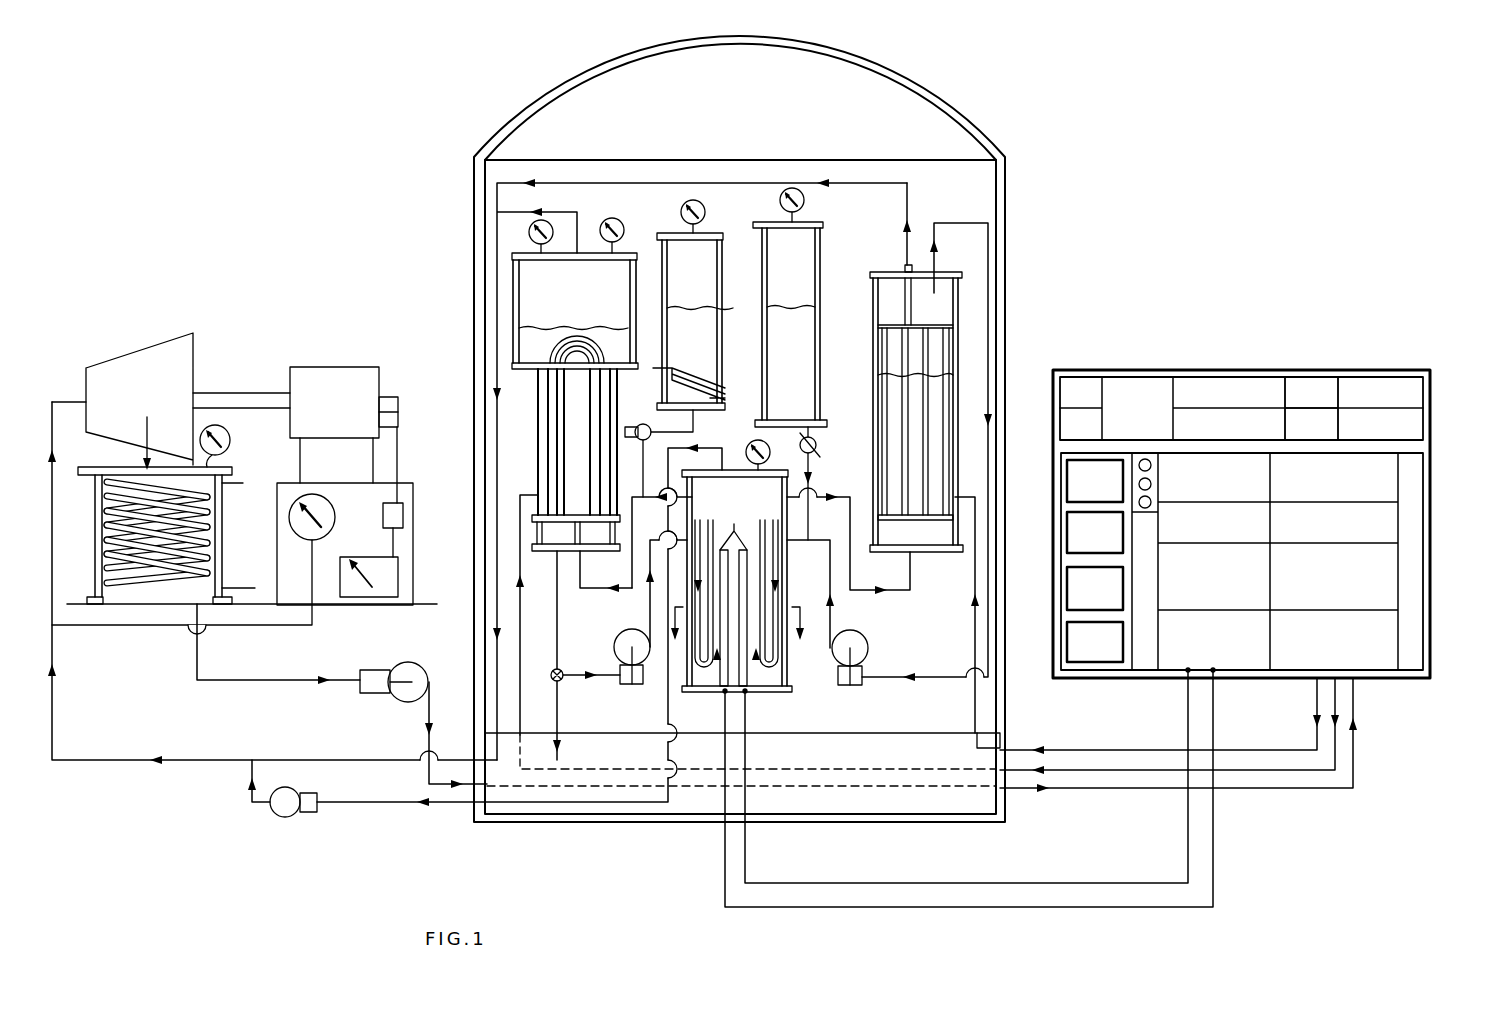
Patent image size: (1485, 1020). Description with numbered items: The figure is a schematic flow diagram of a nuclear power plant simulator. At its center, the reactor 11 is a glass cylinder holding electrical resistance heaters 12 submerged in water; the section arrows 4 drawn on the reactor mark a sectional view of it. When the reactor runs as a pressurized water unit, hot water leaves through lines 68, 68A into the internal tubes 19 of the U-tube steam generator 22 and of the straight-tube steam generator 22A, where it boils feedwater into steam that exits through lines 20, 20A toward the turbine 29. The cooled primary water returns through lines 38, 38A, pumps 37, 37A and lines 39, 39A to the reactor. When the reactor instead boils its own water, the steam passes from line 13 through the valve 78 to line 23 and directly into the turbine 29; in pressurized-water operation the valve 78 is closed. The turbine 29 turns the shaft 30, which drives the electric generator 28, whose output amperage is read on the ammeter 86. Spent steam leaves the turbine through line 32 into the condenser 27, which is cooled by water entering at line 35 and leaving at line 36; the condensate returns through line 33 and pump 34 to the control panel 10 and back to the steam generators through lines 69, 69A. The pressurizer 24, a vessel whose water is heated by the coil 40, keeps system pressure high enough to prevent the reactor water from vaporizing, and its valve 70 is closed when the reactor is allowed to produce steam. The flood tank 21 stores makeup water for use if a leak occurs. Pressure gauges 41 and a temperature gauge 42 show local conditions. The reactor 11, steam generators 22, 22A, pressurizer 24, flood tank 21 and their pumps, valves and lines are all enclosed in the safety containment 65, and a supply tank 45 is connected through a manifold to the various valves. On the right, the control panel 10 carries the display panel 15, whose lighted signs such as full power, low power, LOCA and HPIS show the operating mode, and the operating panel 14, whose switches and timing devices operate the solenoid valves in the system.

The control panel 10 is at (1210, 370).
The reactor 11 is at (790, 478).
The electrical resistance heaters 12 is at (733, 597).
The line 13 is at (722, 448).
The operating panel 14 is at (1390, 602).
The display panel 15 is at (1303, 385).
The internal tubes 19 is at (550, 477).
The line 20 is at (548, 212).
The line 20A is at (907, 198).
The flood tank 21 is at (822, 245).
The steam generator 22 is at (540, 412).
The steam generator 22A is at (875, 458).
The line 23 is at (90, 760).
The pressurizer 24 is at (662, 345).
The condenser 27 is at (222, 530).
The electric generator 28 is at (380, 378).
The turbine 29 is at (193, 333).
The shaft 30 is at (226, 393).
The line 32 is at (147, 417).
The line 33 is at (200, 664).
The pump 34 is at (408, 662).
The line 35 is at (255, 483).
The line 36 is at (262, 574).
The pump 37 is at (616, 645).
The pump 37A is at (868, 653).
The line 38 is at (612, 686).
The line 38A is at (928, 680).
The line 39 is at (650, 623).
The line 39A is at (830, 637).
The section line 4 is at (735, 636).
The coil 40 is at (722, 372).
The pressure gauges 41 is at (530, 236).
The temperature gauges 42 is at (621, 225).
The supply tank 45 is at (990, 742).
The safety containment 65 is at (990, 226).
The line 68 is at (635, 490).
The line 68A is at (813, 495).
The line 69 is at (520, 652).
The line 69A is at (975, 637).
The valve 70 is at (645, 424).
The valve 78 is at (285, 817).
The ammeter 86 is at (400, 577).